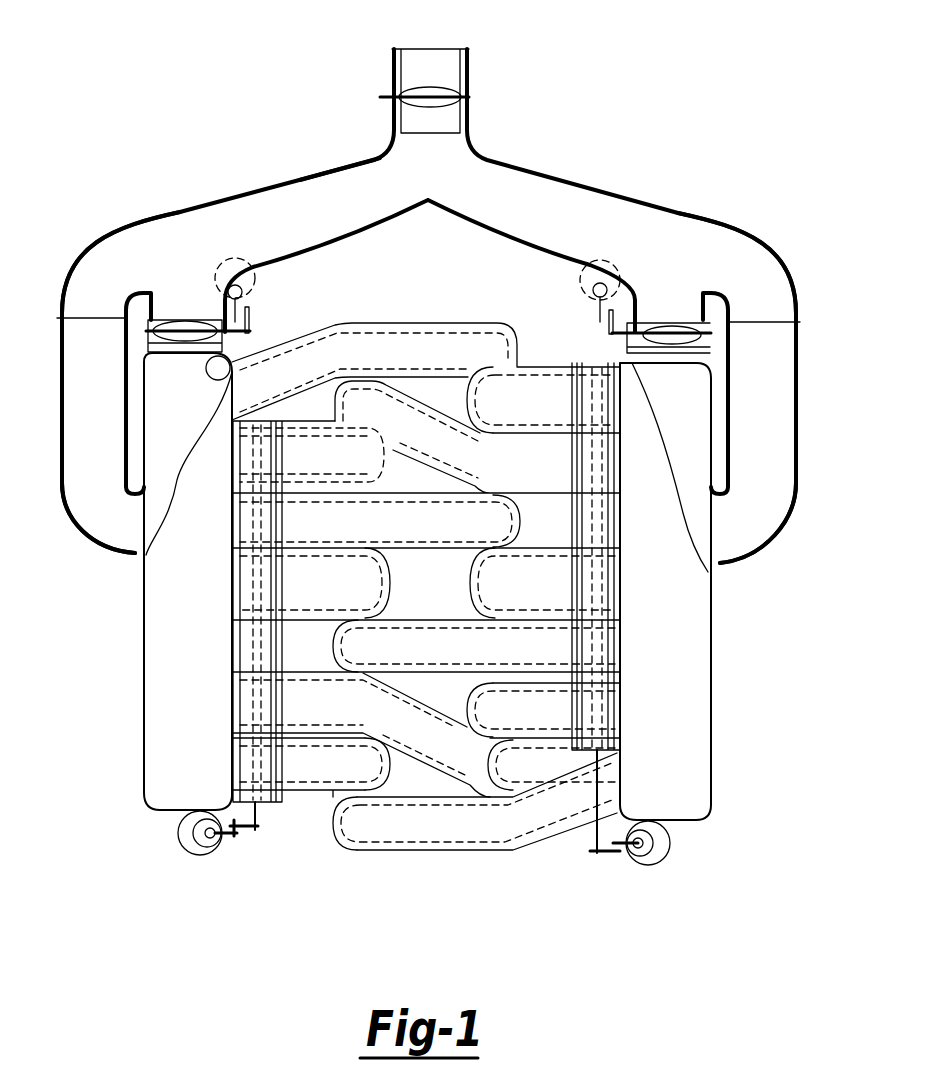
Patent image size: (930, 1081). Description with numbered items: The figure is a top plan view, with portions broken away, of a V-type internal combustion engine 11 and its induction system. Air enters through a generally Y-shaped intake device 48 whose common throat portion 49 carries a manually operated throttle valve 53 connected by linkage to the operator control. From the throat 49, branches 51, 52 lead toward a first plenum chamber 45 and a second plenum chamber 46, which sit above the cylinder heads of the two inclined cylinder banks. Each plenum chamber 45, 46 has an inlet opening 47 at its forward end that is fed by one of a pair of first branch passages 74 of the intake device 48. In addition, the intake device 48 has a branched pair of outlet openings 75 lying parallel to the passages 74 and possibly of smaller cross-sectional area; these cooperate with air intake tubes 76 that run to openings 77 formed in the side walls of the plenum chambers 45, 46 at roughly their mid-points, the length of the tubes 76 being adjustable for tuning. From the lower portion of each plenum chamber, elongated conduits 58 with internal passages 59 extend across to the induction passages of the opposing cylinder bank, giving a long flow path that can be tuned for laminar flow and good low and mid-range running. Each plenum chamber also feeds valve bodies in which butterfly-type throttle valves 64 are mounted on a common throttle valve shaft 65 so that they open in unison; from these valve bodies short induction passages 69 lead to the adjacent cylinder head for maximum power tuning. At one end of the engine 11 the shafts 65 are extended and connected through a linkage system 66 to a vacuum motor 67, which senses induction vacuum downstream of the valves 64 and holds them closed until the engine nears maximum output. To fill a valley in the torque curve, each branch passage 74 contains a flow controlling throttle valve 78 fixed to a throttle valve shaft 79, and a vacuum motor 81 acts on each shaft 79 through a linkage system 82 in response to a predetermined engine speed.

The internal combustion engine 11 is at (676, 199).
The first plenum chamber 45 is at (160, 610).
The second plenum chamber 46 is at (697, 627).
The inlet openings 47 is at (230, 370).
The intake device 48 is at (553, 174).
The common throat portion 49 is at (467, 87).
The branch 51 is at (300, 198).
The branch 52 is at (600, 213).
The manually operated throttle valve 53 is at (435, 90).
The elongated conduits 58 is at (417, 393).
The internal passages 59 is at (523, 330).
The throttle valves 64 is at (253, 577).
The throttle valve shaft 65 is at (248, 810).
The linkage system 66 is at (245, 830).
The vacuum motor 67 is at (182, 838).
The induction passages 69 is at (290, 430).
The first branch passages 74 is at (178, 308).
The outlet openings 75 is at (70, 300).
The air intake tubes 76 is at (80, 353).
The openings 77 is at (105, 548).
The flow controlling throttle valves 78 is at (183, 340).
The throttle valve shafts 79 is at (147, 334).
The vacuum motor 81 is at (252, 283).
The linkage system 82 is at (252, 317).